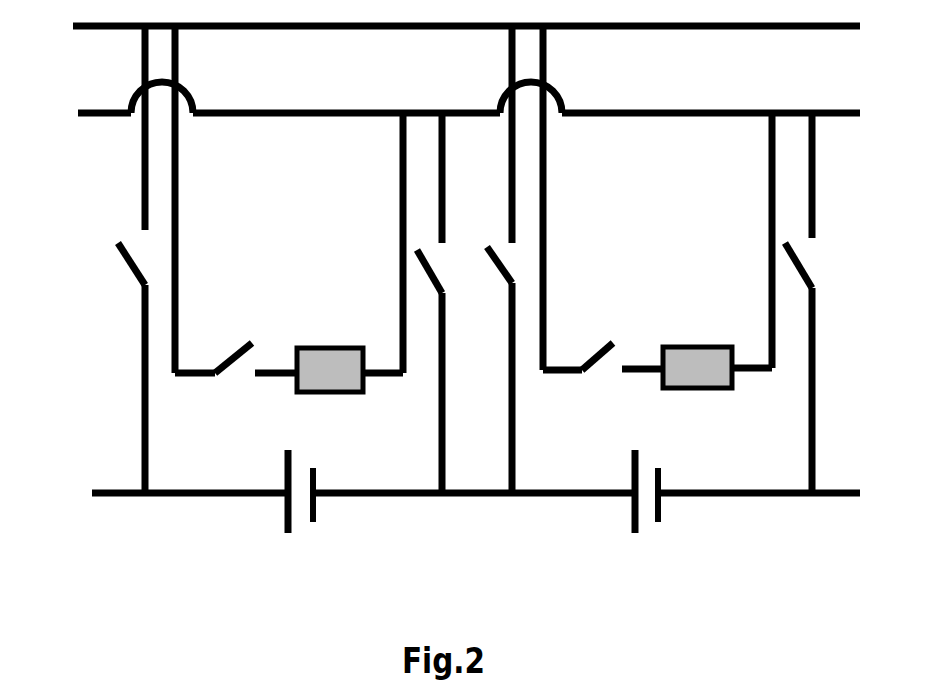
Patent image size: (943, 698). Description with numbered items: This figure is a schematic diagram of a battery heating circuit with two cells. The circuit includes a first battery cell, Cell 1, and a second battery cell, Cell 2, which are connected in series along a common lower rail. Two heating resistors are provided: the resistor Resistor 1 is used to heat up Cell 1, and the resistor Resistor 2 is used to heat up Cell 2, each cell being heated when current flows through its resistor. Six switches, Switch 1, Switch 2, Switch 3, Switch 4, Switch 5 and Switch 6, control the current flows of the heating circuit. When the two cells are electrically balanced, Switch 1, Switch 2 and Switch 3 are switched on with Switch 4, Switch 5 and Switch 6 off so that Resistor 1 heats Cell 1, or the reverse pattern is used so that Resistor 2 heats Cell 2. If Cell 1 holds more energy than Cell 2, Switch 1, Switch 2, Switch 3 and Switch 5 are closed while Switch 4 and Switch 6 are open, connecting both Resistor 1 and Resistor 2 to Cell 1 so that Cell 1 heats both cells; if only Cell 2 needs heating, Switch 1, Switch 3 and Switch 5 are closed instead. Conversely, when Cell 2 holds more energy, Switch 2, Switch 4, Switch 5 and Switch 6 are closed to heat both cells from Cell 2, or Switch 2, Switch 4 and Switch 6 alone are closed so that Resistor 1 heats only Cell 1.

The switch Switch 1 is at (78, 368).
The switch Switch 2 is at (239, 392).
The switch Switch 3 is at (419, 353).
The switch Switch 4 is at (533, 353).
The switch Switch 5 is at (613, 390).
The switch Switch 6 is at (857, 368).
The resistor Resistor 1 is at (322, 355).
The resistor Resistor 2 is at (691, 352).
The cell Cell 1 is at (341, 512).
The cell Cell 2 is at (686, 512).